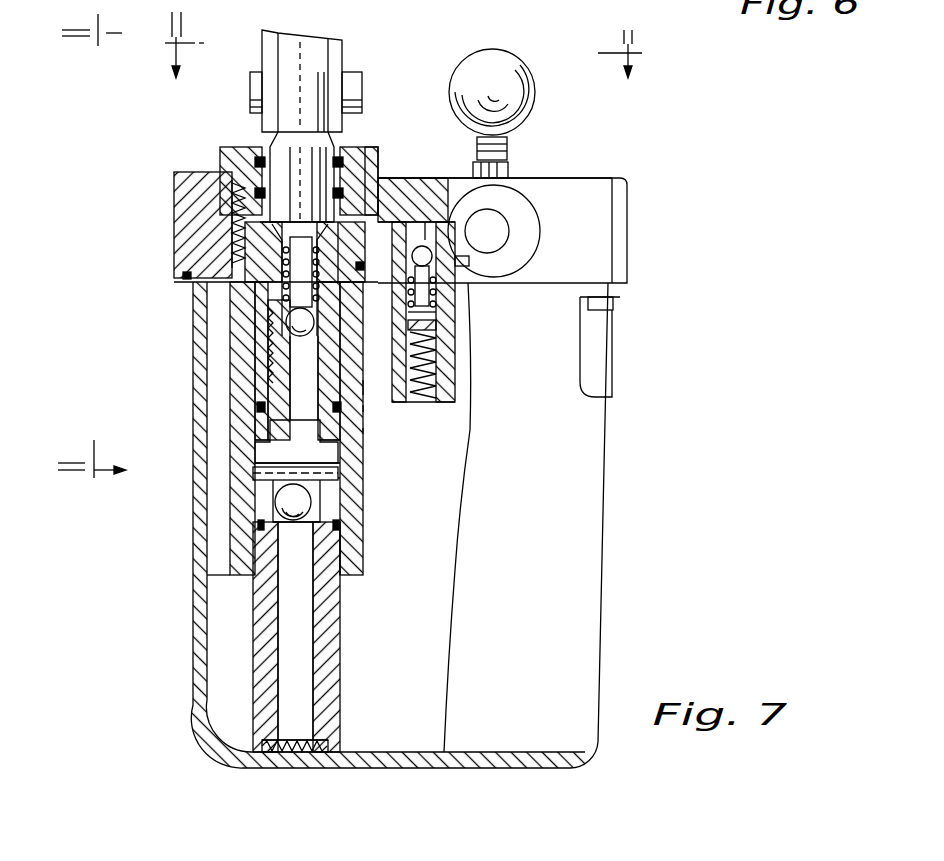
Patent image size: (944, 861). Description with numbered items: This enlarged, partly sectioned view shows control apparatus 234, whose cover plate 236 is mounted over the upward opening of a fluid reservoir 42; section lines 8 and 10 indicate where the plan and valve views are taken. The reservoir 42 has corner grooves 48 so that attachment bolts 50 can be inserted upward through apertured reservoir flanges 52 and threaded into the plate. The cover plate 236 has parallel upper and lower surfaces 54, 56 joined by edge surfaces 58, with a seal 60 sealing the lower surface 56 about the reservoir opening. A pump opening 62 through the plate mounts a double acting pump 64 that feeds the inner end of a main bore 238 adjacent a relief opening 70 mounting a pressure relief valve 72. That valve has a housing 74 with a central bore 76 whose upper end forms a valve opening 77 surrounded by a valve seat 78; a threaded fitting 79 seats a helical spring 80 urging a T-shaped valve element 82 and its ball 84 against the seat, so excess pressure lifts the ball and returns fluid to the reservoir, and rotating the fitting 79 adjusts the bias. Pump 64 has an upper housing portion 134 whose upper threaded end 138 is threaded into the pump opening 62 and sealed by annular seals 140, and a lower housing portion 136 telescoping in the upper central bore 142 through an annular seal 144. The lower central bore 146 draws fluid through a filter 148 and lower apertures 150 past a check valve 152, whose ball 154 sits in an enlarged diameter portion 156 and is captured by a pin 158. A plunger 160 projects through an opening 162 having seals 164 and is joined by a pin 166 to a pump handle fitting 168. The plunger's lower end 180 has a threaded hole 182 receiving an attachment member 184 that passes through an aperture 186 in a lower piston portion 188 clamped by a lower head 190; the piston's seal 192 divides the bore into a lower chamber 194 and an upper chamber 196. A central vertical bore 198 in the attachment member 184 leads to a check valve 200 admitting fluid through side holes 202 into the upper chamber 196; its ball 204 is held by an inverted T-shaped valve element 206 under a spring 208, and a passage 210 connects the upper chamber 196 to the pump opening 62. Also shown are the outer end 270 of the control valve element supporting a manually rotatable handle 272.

The section line 8- 8 is at (400, 56).
The section line 10- 10 is at (82, 264).
The fluid reservoir 42 is at (183, 280).
The corner grooves 48 is at (598, 367).
The attachment bolts 50 is at (607, 302).
The reservoir flanges 52 is at (618, 293).
The upper surface 54 is at (425, 218).
The lower surface 56 is at (548, 283).
The edge surfaces 58 is at (173, 192).
The seal 60 is at (182, 277).
The pump opening 62 is at (358, 190).
The pump 64 is at (232, 586).
The relief opening 70 is at (432, 260).
The pressure relief valve 72 is at (452, 408).
The housing 74 is at (432, 322).
The central bore 76 is at (432, 350).
The valve opening 77 is at (420, 246).
The valve seat 78 is at (418, 225).
The fitting 79 is at (432, 372).
The helical spring 80 is at (430, 310).
The T-shaped valve element 82 is at (434, 296).
The ball 84 is at (469, 263).
The upper housing portion 134 is at (344, 576).
The lower housing portion 136 is at (325, 613).
The upper threaded end 138 is at (250, 150).
The annular seals 140 is at (232, 172).
The central bore 142 is at (340, 465).
The annular seal 144 is at (342, 545).
The central bore 146 is at (305, 645).
The filter 148 is at (307, 738).
The lower apertures 150 is at (283, 745).
The check valve 152 is at (258, 526).
The ball 154 is at (300, 522).
The enlarged diameter portion 156 is at (262, 511).
The pin 158 is at (339, 523).
The plunger 160 is at (340, 135).
The opening 162 is at (285, 175).
The seals 164 is at (326, 208).
The pin 166 is at (360, 88).
The pump handle fitting 168 is at (338, 52).
The lower end 180 is at (258, 386).
The threaded hole 182 is at (258, 408).
The attachment member 184 is at (363, 408).
The aperture 186 is at (272, 440).
The lower piston portion 188 is at (338, 450).
The lower head 190 is at (258, 474).
The seal 192 is at (363, 430).
The lower chamber 194 is at (340, 480).
The upper chamber 196 is at (272, 330).
The central vertical bore 198 is at (258, 462).
The check valve 200 is at (296, 320).
The side holes 202 is at (262, 362).
The ball 204 is at (363, 388).
The inverted T-shaped valve element 206 is at (233, 240).
The spring 208 is at (233, 203).
The passage 210 is at (330, 222).
The control apparatus 234 is at (668, 188).
The cover plate 236 is at (602, 172).
The main bore 238 is at (457, 210).
The outer end 270 is at (500, 212).
The manually rotatable handle 272 is at (508, 102).